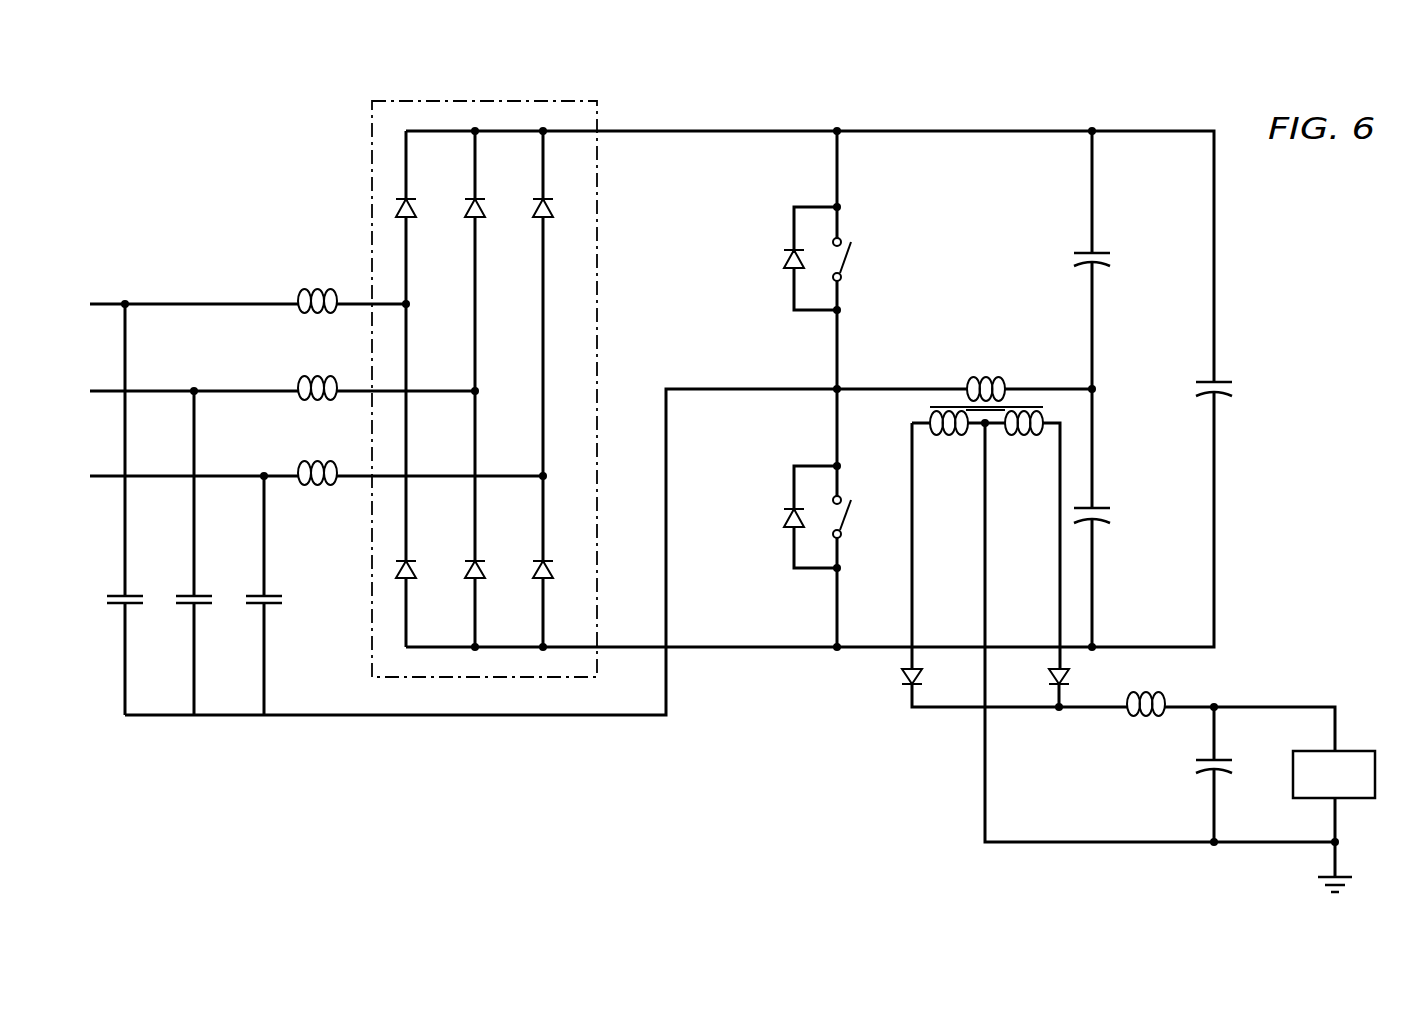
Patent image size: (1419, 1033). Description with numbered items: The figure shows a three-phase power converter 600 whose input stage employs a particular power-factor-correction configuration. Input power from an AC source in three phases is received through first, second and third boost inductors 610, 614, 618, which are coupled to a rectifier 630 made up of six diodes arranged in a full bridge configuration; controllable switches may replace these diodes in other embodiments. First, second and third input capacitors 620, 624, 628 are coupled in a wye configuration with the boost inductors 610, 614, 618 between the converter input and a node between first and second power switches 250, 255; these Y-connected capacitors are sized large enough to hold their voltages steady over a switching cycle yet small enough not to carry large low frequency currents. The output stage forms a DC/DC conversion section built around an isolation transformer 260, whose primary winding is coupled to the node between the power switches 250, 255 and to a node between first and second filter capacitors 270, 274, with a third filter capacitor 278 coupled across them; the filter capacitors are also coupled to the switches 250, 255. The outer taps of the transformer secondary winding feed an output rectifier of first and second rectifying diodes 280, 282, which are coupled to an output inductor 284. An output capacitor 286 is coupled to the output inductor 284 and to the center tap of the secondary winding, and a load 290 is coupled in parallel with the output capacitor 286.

The power converter 600 is at (255, 108).
The rectifier 630 is at (372, 182).
The first boost inductor 610 is at (318, 288).
The second boost inductor 614 is at (318, 377).
The third boost inductor 618 is at (318, 462).
The first input capacitor 620 is at (136, 595).
The second input capacitor 624 is at (205, 606).
The third input capacitor 628 is at (276, 595).
The first power switch 250 is at (785, 262).
The second power switch 255 is at (785, 519).
The isolation transformer 260 is at (985, 376).
The first filter capacitor 270 is at (1102, 253).
The second filter capacitor 274 is at (1102, 508).
The third filter capacitor 278 is at (1207, 382).
The first rectifying diode 280 is at (900, 676).
The second rectifying diode 282 is at (1048, 676).
The output inductor 284 is at (1147, 722).
The output capacitor 286 is at (1224, 760).
The load 290 is at (1292, 780).